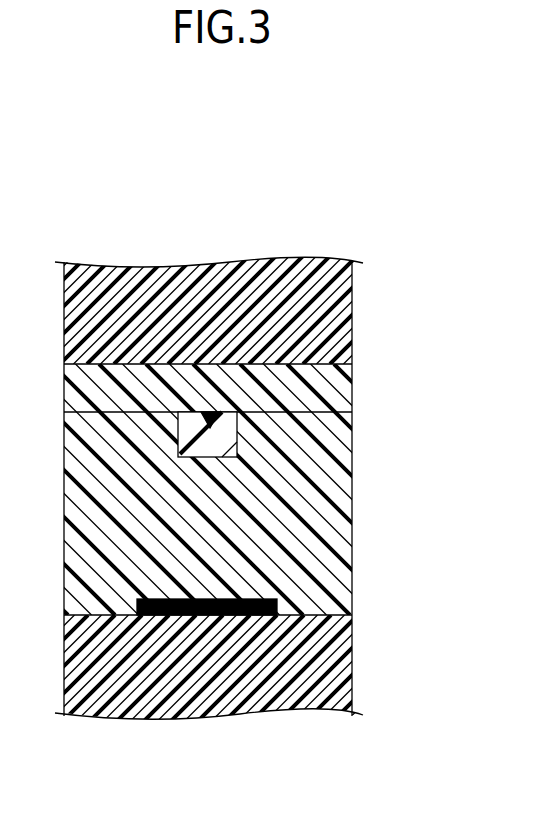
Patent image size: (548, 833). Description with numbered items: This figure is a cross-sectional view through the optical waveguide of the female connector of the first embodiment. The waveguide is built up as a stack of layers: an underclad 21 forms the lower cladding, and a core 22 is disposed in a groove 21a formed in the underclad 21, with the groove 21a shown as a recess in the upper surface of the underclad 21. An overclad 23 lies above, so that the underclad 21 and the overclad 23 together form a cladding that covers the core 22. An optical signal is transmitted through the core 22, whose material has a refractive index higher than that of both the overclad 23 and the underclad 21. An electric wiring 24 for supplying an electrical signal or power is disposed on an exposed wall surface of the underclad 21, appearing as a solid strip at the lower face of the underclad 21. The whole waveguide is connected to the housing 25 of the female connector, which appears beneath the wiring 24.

The underclad 21 is at (327, 563).
The groove 21a is at (208, 412).
The core 22 is at (220, 435).
The overclad 23 is at (335, 385).
The electric wiring 24 is at (178, 616).
The housing 25 is at (254, 688).